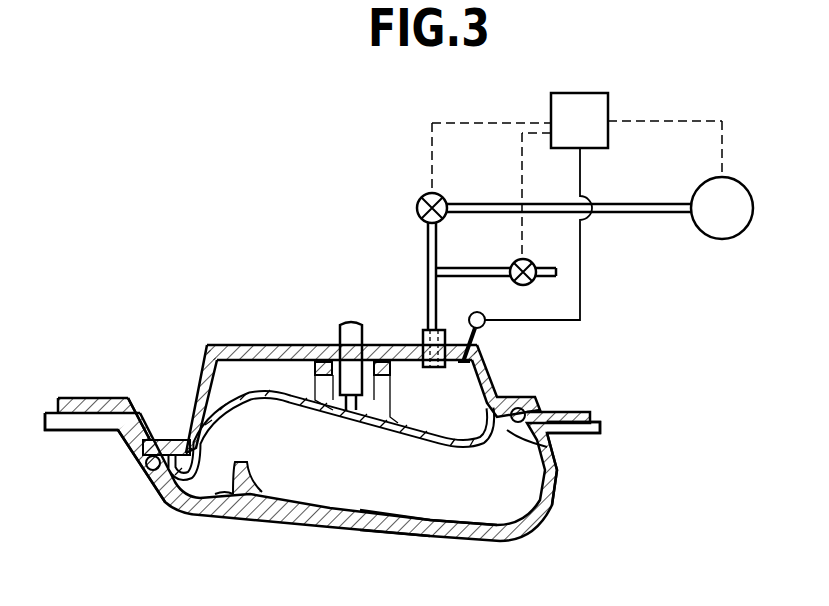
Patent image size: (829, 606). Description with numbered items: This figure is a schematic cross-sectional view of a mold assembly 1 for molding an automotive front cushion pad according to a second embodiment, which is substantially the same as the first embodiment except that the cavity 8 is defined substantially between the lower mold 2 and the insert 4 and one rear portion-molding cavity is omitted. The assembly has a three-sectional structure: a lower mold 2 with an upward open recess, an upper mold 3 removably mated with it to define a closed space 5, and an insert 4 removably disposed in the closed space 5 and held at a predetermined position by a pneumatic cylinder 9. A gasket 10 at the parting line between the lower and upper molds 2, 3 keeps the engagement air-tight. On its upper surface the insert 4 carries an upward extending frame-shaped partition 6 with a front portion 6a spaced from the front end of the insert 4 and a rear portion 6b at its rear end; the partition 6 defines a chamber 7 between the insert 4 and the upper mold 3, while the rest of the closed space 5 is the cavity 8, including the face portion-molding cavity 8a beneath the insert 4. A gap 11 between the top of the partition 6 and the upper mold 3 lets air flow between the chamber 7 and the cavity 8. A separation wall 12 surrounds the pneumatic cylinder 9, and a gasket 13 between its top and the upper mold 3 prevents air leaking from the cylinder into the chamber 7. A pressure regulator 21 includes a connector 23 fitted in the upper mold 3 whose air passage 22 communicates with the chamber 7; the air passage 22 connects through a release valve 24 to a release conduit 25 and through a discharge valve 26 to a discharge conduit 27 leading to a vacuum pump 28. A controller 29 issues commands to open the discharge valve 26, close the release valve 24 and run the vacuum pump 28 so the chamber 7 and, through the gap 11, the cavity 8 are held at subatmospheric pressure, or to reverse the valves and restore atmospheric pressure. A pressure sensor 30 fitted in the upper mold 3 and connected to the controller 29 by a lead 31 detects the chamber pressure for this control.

The mold assembly 1 is at (200, 525).
The lower mold 2 is at (322, 510).
The upper mold 3 is at (488, 382).
The insert 4 is at (222, 347).
The closed space 5 is at (375, 495).
The partition 6 is at (160, 440).
The front portion 6a is at (163, 503).
The rear portion 6b is at (510, 430).
The chamber 7 is at (258, 398).
The cavity 8 is at (497, 477).
The face portion-molding cavity 8a is at (457, 487).
The pneumatic cylinder 9 is at (352, 325).
The gasket 10 is at (140, 462).
The gap 11 is at (180, 440).
The separation wall 12 is at (315, 402).
The gasket 13 is at (325, 345).
The pressure regulator 21 is at (641, 192).
The air passage 22 is at (423, 337).
The connector 23 is at (423, 338).
The release valve 24 is at (532, 260).
The release conduit 25 is at (485, 267).
The discharge valve 26 is at (420, 195).
The discharge conduit 27 is at (428, 242).
The vacuum pump 28 is at (737, 200).
The controller 29 is at (577, 110).
The pressure sensor 30 is at (485, 323).
The lead 31 is at (580, 292).